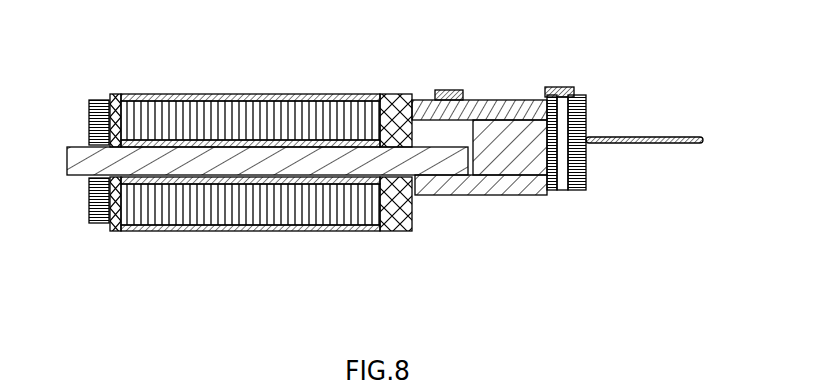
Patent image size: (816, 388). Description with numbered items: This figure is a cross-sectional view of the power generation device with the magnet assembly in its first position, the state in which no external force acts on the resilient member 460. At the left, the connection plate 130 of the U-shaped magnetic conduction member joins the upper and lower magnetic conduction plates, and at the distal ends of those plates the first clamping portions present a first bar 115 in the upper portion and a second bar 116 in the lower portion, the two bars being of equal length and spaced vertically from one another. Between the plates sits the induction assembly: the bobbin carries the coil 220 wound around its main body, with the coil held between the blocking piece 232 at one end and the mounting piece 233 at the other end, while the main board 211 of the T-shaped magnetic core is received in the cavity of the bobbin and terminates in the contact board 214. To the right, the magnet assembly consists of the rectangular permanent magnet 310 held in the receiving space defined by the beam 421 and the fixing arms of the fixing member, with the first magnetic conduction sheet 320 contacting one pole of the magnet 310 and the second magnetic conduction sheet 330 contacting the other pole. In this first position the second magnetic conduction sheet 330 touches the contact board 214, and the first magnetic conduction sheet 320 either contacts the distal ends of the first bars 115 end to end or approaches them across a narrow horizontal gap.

The connection plate 130 is at (91, 213).
The blocking piece 232 is at (116, 97).
The coil 220 is at (270, 93).
The mounting piece 233 is at (410, 226).
The main board 211 is at (143, 162).
The first bar 115 is at (411, 98).
The second bar 116 is at (382, 229).
The first magnetic conduction sheet 320 is at (480, 99).
The second magnetic conduction sheet 330 is at (528, 184).
The contact board 214 is at (465, 197).
The magnet 310 is at (588, 148).
The beam 421 is at (585, 95).
The resilient member 460 is at (627, 137).